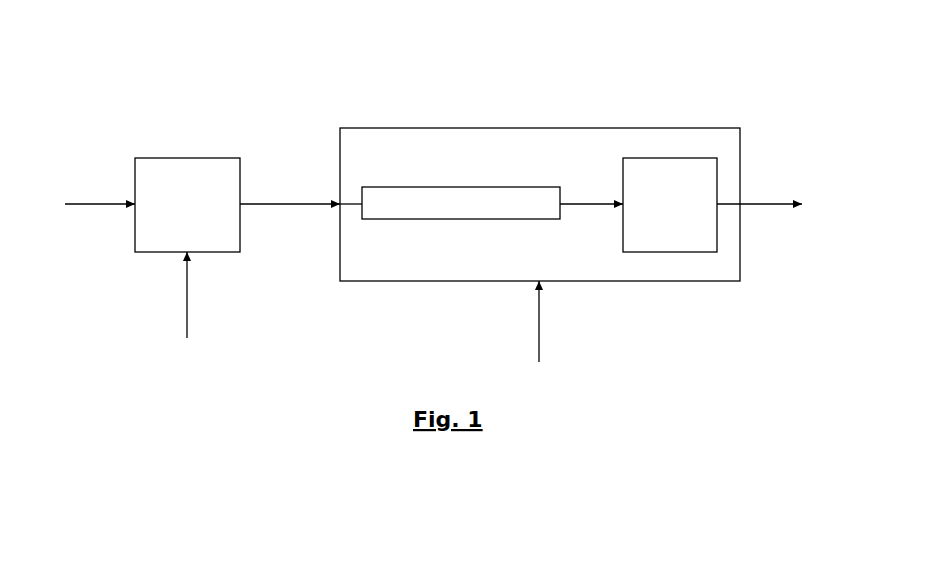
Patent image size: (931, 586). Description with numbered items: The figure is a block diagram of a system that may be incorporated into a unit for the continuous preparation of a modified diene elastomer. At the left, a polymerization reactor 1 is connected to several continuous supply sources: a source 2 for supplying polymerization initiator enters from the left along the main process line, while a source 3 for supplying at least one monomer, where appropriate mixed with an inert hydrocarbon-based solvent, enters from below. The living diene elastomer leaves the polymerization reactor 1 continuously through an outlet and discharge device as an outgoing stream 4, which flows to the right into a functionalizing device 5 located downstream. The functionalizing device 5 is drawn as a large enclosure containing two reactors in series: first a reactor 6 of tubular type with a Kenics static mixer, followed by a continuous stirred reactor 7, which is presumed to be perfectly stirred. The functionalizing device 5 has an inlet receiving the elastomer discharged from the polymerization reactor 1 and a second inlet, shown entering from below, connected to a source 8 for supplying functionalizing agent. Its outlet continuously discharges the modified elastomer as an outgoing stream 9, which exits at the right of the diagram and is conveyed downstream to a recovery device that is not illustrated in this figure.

The polymerization reactor 1 is at (187, 158).
The source for supplying polymerization initiator 2 is at (108, 204).
The source for supplying monomer 3 is at (187, 298).
The outgoing stream of living diene elastomer 4 is at (300, 204).
The functionalizing device 5 is at (540, 128).
The tubular-type reactor 6 is at (463, 187).
The continuous stirred reactor 7 is at (668, 158).
The source for supplying functionalizing agent 8 is at (539, 308).
The outgoing stream of modified elastomer 9 is at (782, 204).